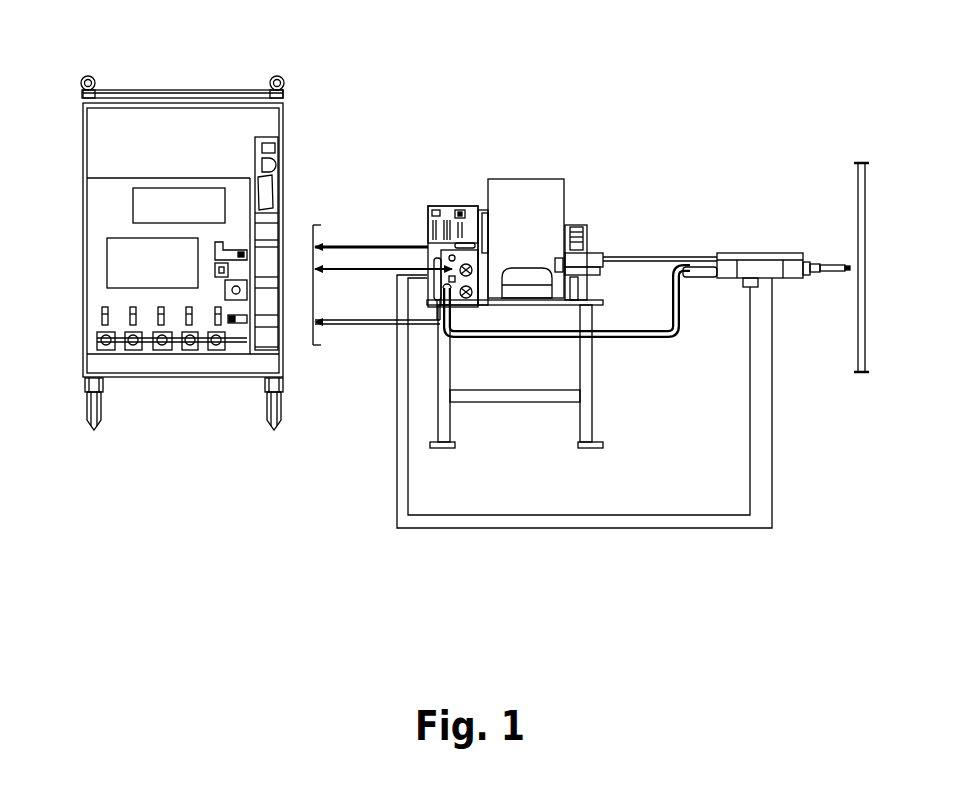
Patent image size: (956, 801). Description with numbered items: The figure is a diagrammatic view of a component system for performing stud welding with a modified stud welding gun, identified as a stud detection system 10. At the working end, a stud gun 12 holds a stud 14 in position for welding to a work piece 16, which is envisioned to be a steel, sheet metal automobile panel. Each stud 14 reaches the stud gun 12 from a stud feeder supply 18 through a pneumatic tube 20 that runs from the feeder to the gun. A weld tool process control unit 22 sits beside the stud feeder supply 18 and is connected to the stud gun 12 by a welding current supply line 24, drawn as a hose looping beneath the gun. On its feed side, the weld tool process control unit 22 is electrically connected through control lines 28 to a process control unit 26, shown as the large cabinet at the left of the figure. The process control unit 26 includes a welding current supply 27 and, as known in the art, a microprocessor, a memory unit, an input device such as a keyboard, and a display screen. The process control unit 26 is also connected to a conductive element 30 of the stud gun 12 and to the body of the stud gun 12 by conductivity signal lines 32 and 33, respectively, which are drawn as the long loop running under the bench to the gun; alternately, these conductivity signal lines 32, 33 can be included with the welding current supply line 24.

The stud detection system 10 is at (523, 117).
The stud gun 12 is at (802, 252).
The stud 14 is at (843, 275).
The work piece 16 is at (857, 188).
The stud feeder supply 18 is at (556, 206).
The pneumatic tube 20 is at (639, 257).
The weld tool process control unit 22 is at (450, 212).
The welding current supply line 24 is at (662, 338).
The process control unit 26 is at (267, 123).
The welding current supply 27 is at (127, 259).
The control lines 28 is at (312, 268).
The conductive element 30 is at (743, 283).
The conductivity signal line 32 is at (617, 515).
The conductivity signal line 33 is at (620, 530).